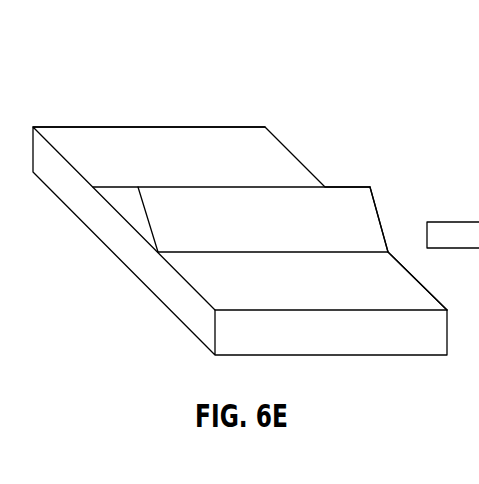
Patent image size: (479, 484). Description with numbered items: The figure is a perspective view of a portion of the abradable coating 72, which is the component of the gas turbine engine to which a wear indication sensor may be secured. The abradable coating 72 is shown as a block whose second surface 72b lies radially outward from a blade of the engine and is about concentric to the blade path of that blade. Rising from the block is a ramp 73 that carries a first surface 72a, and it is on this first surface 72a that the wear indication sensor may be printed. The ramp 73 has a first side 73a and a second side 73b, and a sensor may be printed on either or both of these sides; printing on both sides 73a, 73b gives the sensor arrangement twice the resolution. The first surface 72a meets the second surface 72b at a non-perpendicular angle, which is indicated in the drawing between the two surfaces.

The abradable coating 72 is at (195, 172).
The first surface 72a is at (163, 227).
The second surface 72b is at (78, 129).
The ramp 73 is at (365, 209).
The first side of the ramp 73a is at (313, 195).
The second side of the ramp 73b is at (247, 176).